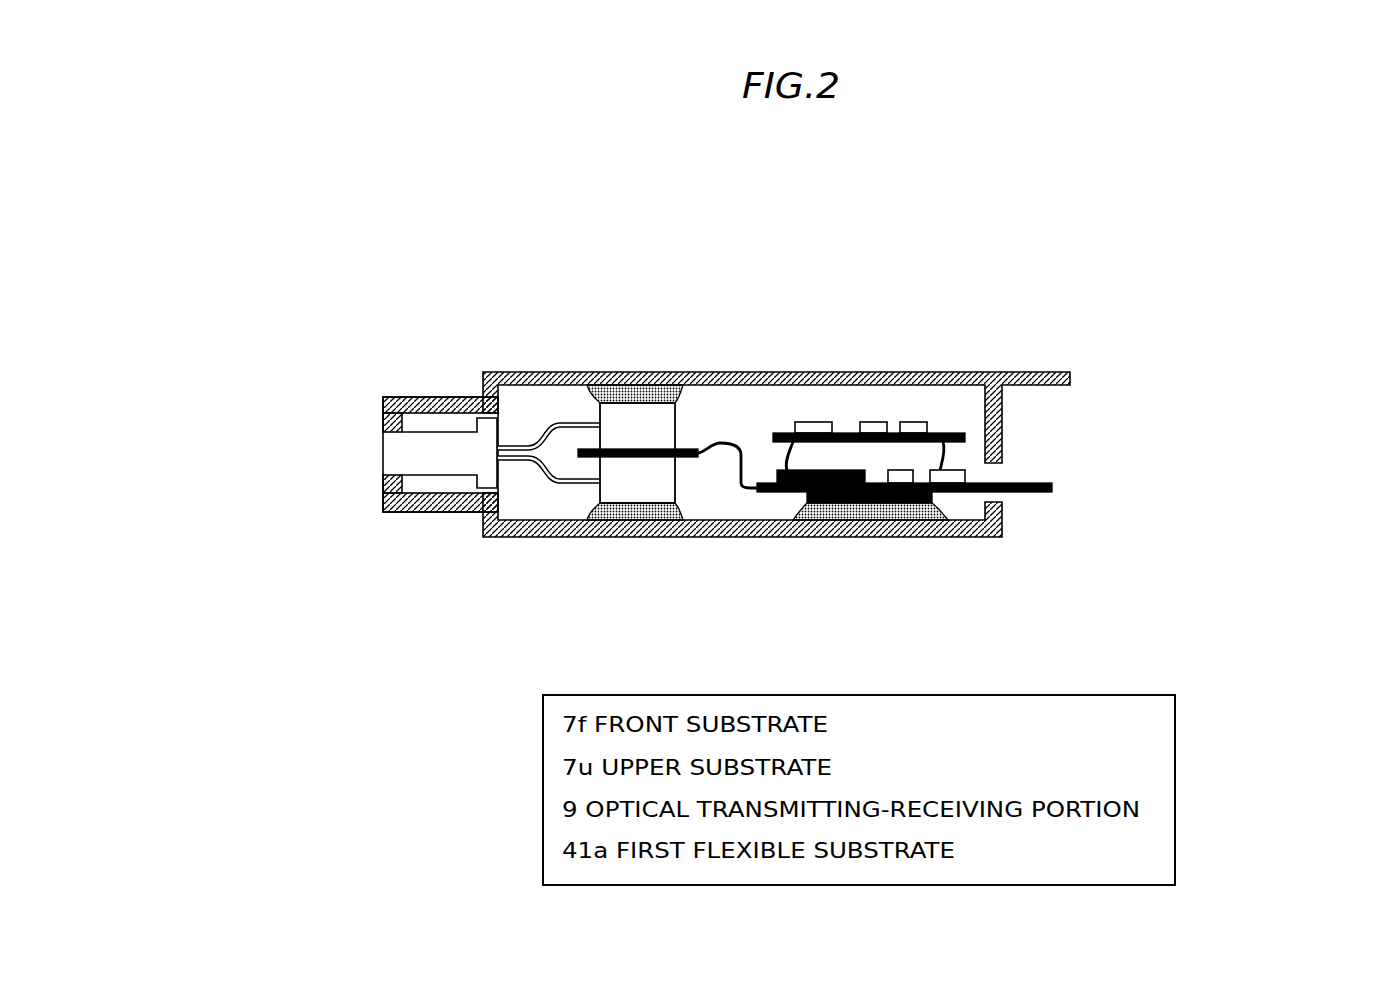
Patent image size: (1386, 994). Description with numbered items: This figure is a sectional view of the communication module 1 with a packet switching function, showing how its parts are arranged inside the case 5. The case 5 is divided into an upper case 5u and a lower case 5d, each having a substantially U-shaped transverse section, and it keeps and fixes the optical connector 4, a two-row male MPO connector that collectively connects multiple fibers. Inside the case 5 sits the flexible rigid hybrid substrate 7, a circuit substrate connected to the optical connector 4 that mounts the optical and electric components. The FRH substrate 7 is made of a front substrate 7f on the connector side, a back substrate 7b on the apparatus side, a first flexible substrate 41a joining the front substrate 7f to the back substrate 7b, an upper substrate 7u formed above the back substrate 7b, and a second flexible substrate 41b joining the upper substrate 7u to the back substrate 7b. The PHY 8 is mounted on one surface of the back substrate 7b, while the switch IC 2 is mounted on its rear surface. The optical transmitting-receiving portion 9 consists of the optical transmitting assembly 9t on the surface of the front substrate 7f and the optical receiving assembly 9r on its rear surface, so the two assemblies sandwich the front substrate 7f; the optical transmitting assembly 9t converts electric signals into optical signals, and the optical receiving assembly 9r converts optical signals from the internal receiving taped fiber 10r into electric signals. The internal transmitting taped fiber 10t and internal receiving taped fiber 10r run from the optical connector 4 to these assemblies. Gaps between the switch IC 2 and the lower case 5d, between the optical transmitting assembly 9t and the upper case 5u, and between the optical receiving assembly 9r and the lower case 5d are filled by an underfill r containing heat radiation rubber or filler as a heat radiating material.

The communication module 1 is at (921, 302).
The switch IC 2 is at (807, 497).
The optical connector 4 is at (435, 478).
The case 5 is at (1022, 370).
The upper case 5u is at (747, 372).
The lower case 5d is at (967, 537).
The flexible rigid hybrid (FRH) substrate 7 is at (1029, 482).
The front substrate 7f is at (686, 459).
The upper substrate 7u is at (937, 432).
The back substrate 7b is at (1035, 492).
The PHY 8 is at (843, 470).
The optical transmitting-receiving portion 9 is at (683, 435).
The optical transmitting assembly 9t is at (600, 420).
The optical receiving assembly 9r is at (600, 490).
The internal transmitting taped fiber 10t is at (557, 427).
The internal receiving taped fiber 10r is at (557, 480).
The first flexible substrate 41a is at (733, 440).
The second flexible substrate 41b is at (890, 452).
The underfill r is at (648, 392).